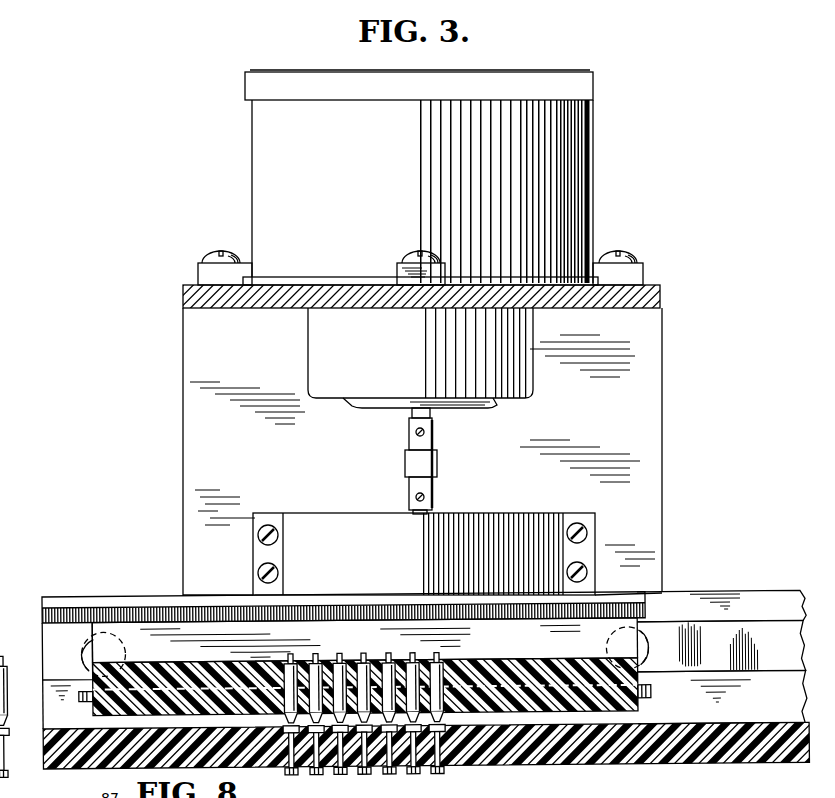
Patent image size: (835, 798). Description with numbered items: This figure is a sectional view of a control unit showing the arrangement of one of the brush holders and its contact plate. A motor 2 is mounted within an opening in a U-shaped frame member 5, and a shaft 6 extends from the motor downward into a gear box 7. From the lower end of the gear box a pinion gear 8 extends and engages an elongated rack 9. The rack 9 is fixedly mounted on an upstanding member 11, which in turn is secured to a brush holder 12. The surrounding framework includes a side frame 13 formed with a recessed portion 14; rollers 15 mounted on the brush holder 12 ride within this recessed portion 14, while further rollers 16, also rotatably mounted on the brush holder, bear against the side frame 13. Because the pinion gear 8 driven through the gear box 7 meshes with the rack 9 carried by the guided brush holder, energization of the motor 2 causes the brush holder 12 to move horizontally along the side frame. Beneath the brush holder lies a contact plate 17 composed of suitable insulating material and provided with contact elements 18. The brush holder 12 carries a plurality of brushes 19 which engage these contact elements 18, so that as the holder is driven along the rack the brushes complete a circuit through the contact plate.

The motor 2 is at (592, 228).
The U-shaped frame member 5 is at (653, 353).
The shaft 6 is at (434, 462).
The gear box 7 is at (523, 513).
The pinion gear 8 is at (352, 623).
The elongated rack 9 is at (613, 608).
The upstanding member 11 is at (645, 659).
The brush holder 12 is at (640, 717).
The side frame 13 is at (770, 597).
The recessed portion 14 is at (758, 676).
The rollers 15 is at (80, 655).
The rollers 16 is at (80, 700).
The contact plate 17 is at (568, 771).
The contact elements 18 is at (315, 777).
The brushes 19 is at (314, 656).